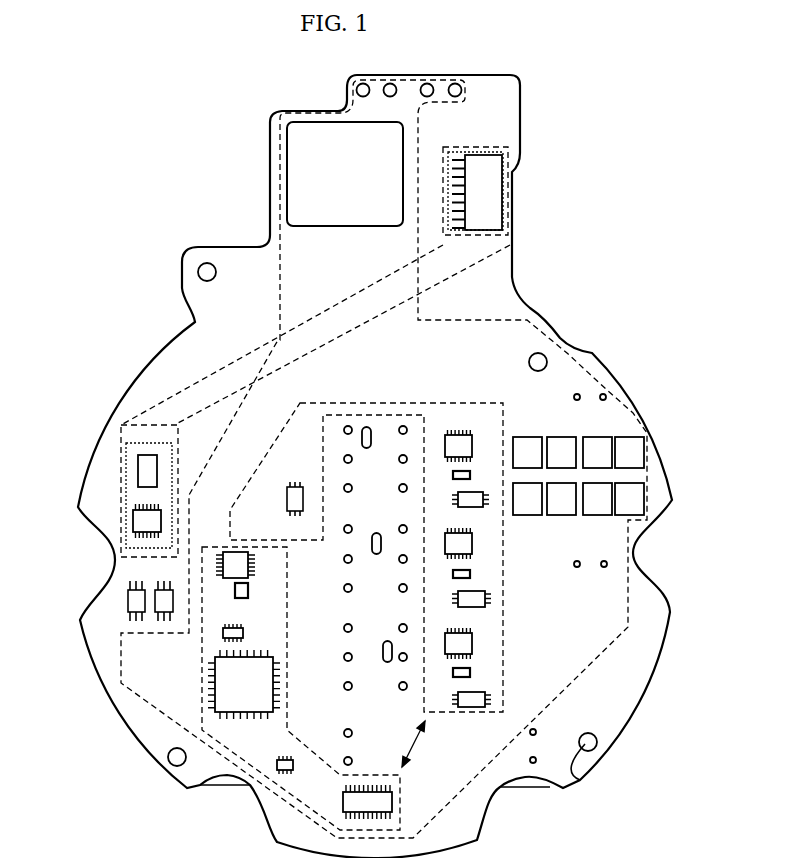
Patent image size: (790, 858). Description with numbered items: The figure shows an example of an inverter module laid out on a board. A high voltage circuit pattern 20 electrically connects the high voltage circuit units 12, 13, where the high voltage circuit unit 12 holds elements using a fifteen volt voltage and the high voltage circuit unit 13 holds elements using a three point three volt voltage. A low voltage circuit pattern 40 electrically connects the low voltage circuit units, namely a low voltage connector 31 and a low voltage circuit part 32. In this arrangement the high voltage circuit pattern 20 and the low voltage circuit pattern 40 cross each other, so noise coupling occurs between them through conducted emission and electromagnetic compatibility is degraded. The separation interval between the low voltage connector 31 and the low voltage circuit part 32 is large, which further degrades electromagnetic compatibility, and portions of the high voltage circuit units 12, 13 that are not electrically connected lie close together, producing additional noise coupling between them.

The high voltage circuit unit 12 is at (507, 640).
The high voltage circuit unit 13 is at (202, 670).
The high voltage circuit pattern 20 is at (280, 165).
The low voltage connector 31 is at (512, 158).
The low voltage circuit part 32 is at (121, 452).
The low voltage circuit pattern 40 is at (512, 243).